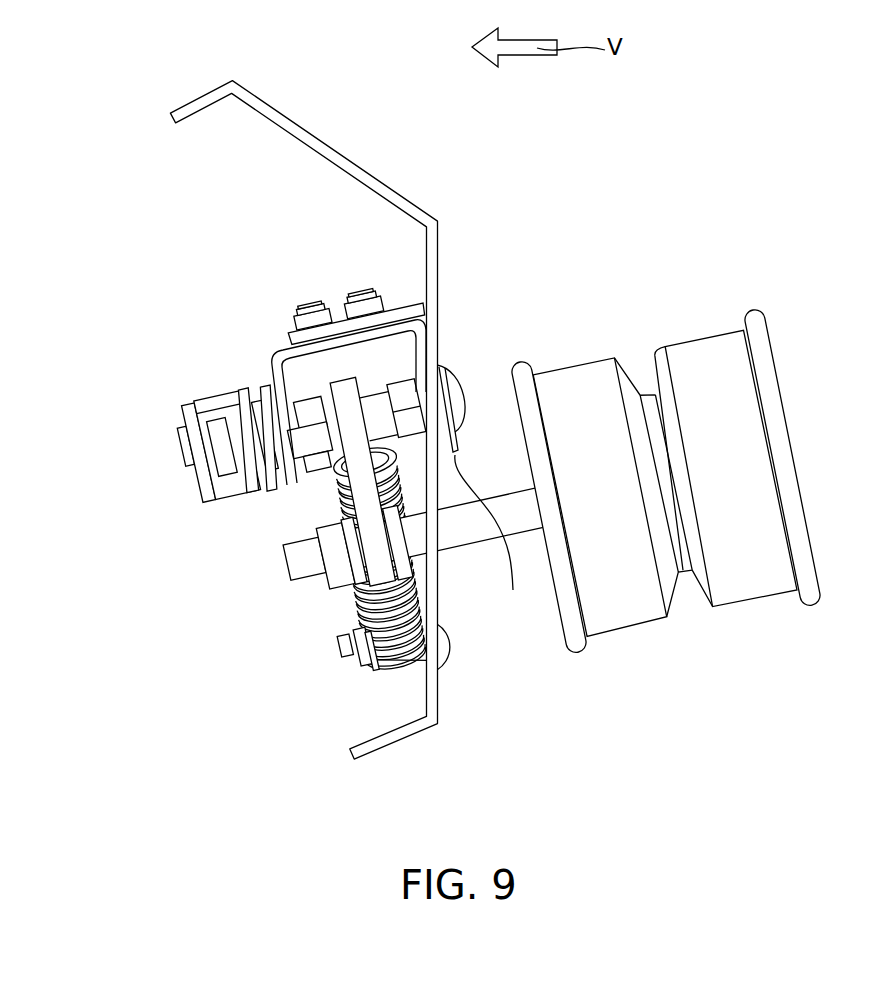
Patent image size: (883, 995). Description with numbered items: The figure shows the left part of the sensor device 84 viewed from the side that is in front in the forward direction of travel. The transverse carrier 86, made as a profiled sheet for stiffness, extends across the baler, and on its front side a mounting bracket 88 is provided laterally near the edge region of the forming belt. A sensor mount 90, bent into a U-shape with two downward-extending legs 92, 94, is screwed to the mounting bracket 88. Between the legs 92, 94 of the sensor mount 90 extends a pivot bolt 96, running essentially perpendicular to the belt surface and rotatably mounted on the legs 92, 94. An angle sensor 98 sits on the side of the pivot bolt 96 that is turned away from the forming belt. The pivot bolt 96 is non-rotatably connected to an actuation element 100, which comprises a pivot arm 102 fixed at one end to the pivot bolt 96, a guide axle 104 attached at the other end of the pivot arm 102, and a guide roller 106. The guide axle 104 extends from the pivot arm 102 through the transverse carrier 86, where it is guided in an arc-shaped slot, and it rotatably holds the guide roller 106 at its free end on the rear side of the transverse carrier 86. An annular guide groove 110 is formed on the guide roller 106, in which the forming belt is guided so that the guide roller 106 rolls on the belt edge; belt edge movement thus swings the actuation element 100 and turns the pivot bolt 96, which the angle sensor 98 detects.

The sensor device 84 is at (167, 482).
The transverse carrier 86 is at (304, 137).
The mounting bracket 88 is at (402, 303).
The sensor mount 90 is at (273, 360).
The leg 92 is at (298, 445).
The leg 94 is at (485, 517).
The pivot bolt 96 is at (375, 405).
The angle sensor 98 is at (217, 445).
The actuation element 100 is at (300, 597).
The pivot arm 102 is at (364, 458).
The guide axle 104 is at (455, 527).
The guide roller 106 is at (748, 542).
The annular guide groove 110 is at (684, 555).